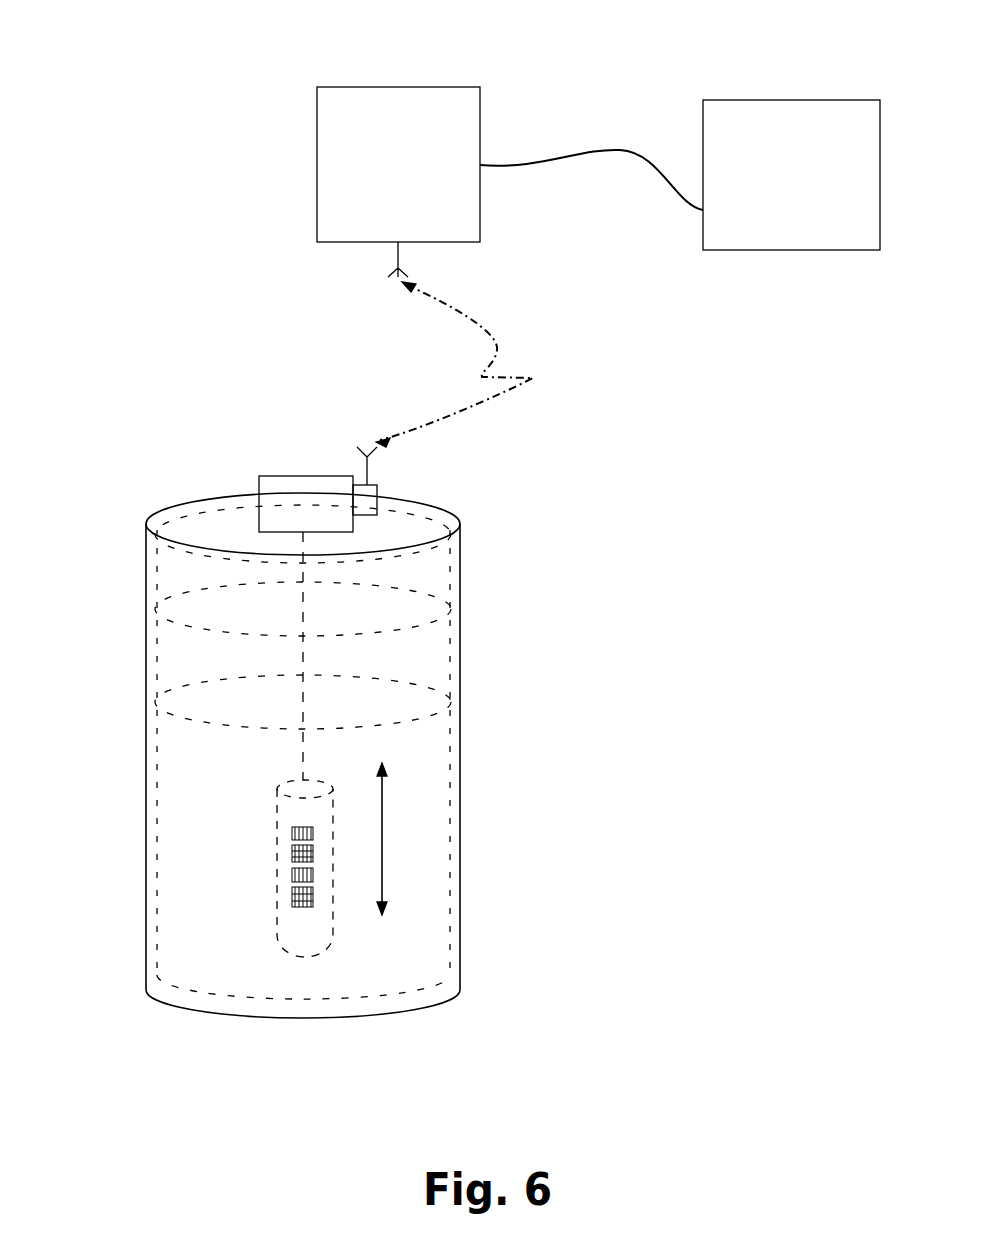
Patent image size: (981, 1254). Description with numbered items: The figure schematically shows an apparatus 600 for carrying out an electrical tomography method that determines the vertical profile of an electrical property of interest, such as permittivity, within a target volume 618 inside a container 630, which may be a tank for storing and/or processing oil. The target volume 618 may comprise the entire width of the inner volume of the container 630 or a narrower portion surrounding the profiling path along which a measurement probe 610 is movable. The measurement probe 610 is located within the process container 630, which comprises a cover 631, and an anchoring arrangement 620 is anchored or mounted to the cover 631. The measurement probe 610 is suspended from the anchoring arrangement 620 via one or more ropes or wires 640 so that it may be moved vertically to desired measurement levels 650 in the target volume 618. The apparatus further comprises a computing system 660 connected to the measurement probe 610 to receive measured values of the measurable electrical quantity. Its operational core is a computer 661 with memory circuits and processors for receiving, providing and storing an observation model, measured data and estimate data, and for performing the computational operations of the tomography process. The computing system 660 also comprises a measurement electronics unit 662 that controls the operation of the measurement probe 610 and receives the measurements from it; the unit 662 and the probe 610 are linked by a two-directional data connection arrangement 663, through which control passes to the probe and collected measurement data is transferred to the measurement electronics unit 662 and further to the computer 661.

The apparatus 600 is at (670, 883).
The measurement probe 610 is at (277, 855).
The target volume 618 is at (450, 745).
The anchoring arrangement 620 is at (287, 473).
The container 630 is at (460, 892).
The cover 631 is at (197, 527).
The ropes or wires 640 is at (302, 748).
The measurement levels 650 is at (415, 628).
The computing system 660 is at (688, 373).
The computer 661 is at (858, 223).
The measurement electronics unit 662 is at (467, 146).
The two-directional data connection arrangement 663 is at (303, 308).